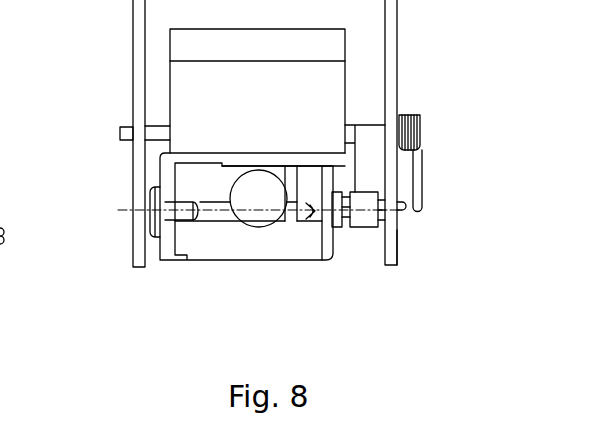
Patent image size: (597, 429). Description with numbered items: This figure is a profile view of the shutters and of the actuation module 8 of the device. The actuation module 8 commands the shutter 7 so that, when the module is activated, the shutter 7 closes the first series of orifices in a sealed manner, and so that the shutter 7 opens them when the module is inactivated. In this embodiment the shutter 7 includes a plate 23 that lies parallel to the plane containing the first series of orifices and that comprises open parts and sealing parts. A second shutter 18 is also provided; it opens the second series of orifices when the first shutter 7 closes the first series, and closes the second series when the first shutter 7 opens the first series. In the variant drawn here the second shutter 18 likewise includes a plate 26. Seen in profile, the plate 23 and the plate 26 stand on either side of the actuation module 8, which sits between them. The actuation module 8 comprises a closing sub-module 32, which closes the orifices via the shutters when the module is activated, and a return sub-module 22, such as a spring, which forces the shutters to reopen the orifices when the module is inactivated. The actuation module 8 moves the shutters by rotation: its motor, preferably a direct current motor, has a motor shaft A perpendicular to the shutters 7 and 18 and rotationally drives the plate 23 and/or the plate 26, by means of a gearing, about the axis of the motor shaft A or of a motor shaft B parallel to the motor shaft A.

The shutter 7 is at (132, 262).
The actuation module 8 is at (256, 248).
The second shutter 18 is at (397, 53).
The return sub-module 22 is at (420, 128).
The plate 23 is at (126, 79).
The plate 26 is at (403, 251).
The closing sub-module 32 is at (284, 245).
The motor shaft A is at (398, 213).
The motor shaft B is at (110, 135).